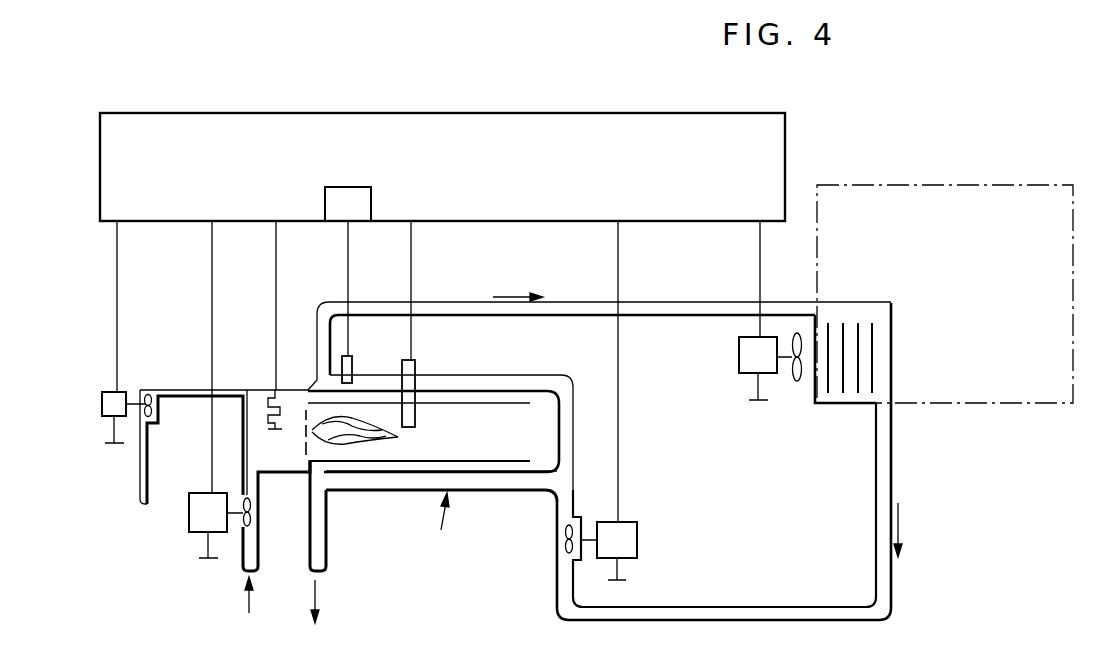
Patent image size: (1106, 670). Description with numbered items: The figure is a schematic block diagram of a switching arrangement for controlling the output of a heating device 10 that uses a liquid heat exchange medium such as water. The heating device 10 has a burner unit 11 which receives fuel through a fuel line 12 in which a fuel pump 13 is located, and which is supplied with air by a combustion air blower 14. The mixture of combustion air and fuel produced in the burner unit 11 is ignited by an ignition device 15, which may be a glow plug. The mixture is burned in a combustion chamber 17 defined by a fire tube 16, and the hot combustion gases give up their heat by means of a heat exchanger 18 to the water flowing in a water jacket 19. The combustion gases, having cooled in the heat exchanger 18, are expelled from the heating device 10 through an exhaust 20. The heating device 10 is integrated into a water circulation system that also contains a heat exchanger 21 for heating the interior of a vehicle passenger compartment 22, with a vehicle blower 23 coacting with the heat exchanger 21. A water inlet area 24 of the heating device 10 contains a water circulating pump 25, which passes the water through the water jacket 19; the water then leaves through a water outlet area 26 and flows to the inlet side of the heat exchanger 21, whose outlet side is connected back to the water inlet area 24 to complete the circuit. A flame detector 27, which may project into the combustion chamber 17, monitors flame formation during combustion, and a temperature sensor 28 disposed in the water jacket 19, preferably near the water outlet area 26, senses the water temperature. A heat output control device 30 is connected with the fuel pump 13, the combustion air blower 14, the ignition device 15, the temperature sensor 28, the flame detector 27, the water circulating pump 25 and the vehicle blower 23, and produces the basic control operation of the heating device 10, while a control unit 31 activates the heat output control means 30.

The heating device 10 is at (444, 517).
The burner unit 11 is at (304, 440).
The fuel line 12 is at (142, 473).
The fuel pump 13 is at (102, 403).
The combustion air blower 14 is at (200, 512).
The ignition device 15 is at (271, 408).
The fire tube 16 is at (415, 461).
The combustion chamber 17 is at (467, 447).
The heat exchanger 18 is at (505, 390).
The water jacket 19 is at (497, 493).
The exhaust 20 is at (322, 548).
The heat exchanger 21 is at (873, 358).
The vehicle passenger compartment 22 is at (993, 278).
The vehicle blower 23 is at (745, 358).
The water inlet area 24 is at (556, 500).
The water circulating pump 25 is at (622, 542).
The water outlet area 26 is at (318, 383).
The flame detector 27 is at (415, 390).
The temperature sensor 28 is at (352, 368).
The heat output control device 30 is at (228, 134).
The control unit 31 is at (348, 204).